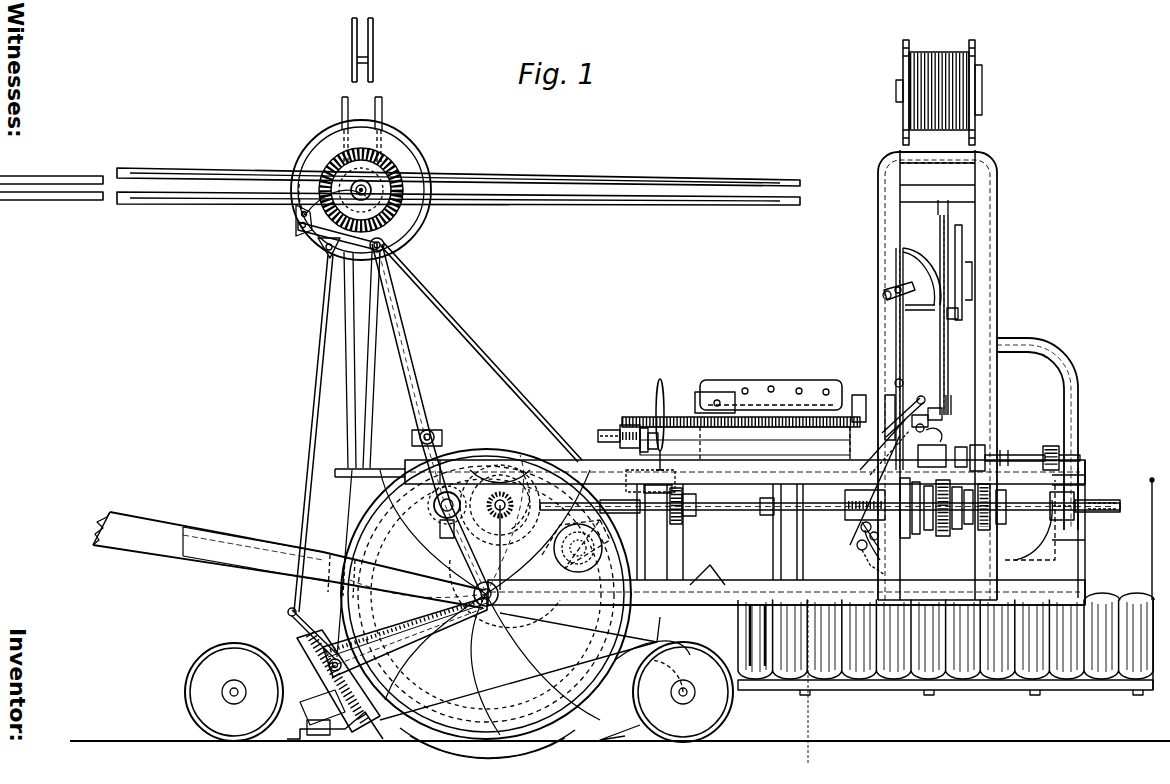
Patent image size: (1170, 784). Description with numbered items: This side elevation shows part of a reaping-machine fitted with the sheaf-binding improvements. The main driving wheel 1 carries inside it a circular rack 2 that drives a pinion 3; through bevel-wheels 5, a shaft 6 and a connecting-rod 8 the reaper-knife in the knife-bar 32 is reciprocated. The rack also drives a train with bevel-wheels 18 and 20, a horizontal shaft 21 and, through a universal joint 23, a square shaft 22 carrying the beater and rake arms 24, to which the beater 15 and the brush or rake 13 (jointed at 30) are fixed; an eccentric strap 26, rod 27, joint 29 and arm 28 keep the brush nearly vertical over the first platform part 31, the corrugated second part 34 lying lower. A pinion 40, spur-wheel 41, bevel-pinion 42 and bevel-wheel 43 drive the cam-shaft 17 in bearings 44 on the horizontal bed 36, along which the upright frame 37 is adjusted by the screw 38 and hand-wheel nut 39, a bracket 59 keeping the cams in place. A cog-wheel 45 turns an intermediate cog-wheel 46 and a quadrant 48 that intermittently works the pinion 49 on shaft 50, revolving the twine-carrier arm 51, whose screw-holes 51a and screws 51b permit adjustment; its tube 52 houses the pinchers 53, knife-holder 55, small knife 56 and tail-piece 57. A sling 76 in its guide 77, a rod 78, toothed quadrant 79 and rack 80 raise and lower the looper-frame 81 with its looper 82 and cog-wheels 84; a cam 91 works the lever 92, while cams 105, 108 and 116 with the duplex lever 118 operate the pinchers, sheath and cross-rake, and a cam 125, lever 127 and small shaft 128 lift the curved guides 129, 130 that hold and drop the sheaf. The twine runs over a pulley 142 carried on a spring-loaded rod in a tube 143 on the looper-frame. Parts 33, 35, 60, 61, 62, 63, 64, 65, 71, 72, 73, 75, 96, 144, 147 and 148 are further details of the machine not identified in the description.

The main ground or driving wheel 1 is at (480, 452).
The circular rack 2 is at (430, 500).
The pinion 3 is at (505, 585).
The bevel-wheels 5 is at (576, 546).
The shaft 6 is at (405, 637).
The connecting-rod 8 is at (487, 732).
The rake or brush 13 is at (939, 92).
The beater 15 is at (373, 45).
The cam-shaft 17 is at (1130, 500).
The bevel-wheels 18 is at (435, 505).
The bevel-wheels 20 is at (302, 162).
The horizontal shaft 21 is at (361, 185).
The square shaft 22 is at (366, 190).
The universal joint 23 is at (336, 220).
The beater and rake arms 24 is at (400, 376).
The eccentric strap 26 is at (320, 248).
The rod 27 is at (313, 433).
The arm 28 is at (314, 631).
The joint 29 is at (284, 609).
The joint 30 is at (288, 560).
The first part of platform 31 is at (473, 656).
The knife-bar 32 is at (946, 636).
The guard base 33 is at (953, 646).
The second part of platform 34 is at (934, 375).
The post 35 is at (1158, 539).
The horizontal frame or bed 36 is at (710, 532).
The upright frame-work 37 is at (1017, 520).
The screw 38 is at (741, 421).
The hand-wheel nut 39 is at (662, 417).
The pinion 40 is at (437, 529).
The spur-wheel 41 is at (508, 547).
The bevel-pinion 42 is at (500, 505).
The bevel-wheel 43 is at (500, 501).
The bearings 44 is at (830, 519).
The cog-wheel 45 is at (681, 514).
The intermediate cog-wheel 46 is at (879, 537).
The quadrant 48 is at (650, 472).
The pinion 49 is at (659, 473).
The shaft 50 is at (599, 436).
The twine-carrier arm 51 is at (771, 395).
The screw-holes 51a is at (717, 398).
The screws 51b is at (771, 386).
The tube 52 is at (856, 403).
The twine-carrier pinchers 53 is at (910, 413).
The knife-holder 55 is at (917, 416).
The small knife 56 is at (916, 430).
The tail-piece 57 is at (932, 456).
The bracket 59 is at (912, 516).
The lever 60 is at (877, 492).
The pivot 61 is at (860, 523).
The gear 62 is at (865, 504).
The link 63 is at (874, 532).
The spring 64 is at (934, 435).
The block 65 is at (944, 418).
The gear 71 is at (985, 510).
The rod 72 is at (890, 452).
The rod 73 is at (886, 415).
The arm 75 is at (873, 562).
The sling 76 is at (880, 545).
The guide 77 is at (882, 445).
The rod 78 is at (906, 359).
The toothed quadrant 79 is at (904, 287).
The rack 80 is at (922, 275).
The looper-frame 81 is at (947, 212).
The looper 82 is at (951, 315).
The cog-wheels 84 is at (920, 311).
The cam 91 is at (919, 508).
The lever 92 is at (931, 508).
The pin 96 is at (954, 405).
The cam 105 is at (943, 509).
The cam 108 is at (959, 511).
The cam 116 is at (964, 518).
The duplex lever 118 is at (629, 436).
The cam 125 is at (1006, 511).
The lever 127 is at (1007, 453).
The small shaft 128 is at (1012, 453).
The curved guide 129 is at (1061, 452).
The curved guide 130 is at (962, 451).
The pulley 142 is at (960, 318).
The tube 143 is at (963, 272).
The bearing 144 is at (1066, 513).
The bracket 147 is at (632, 444).
The bracket 148 is at (656, 448).